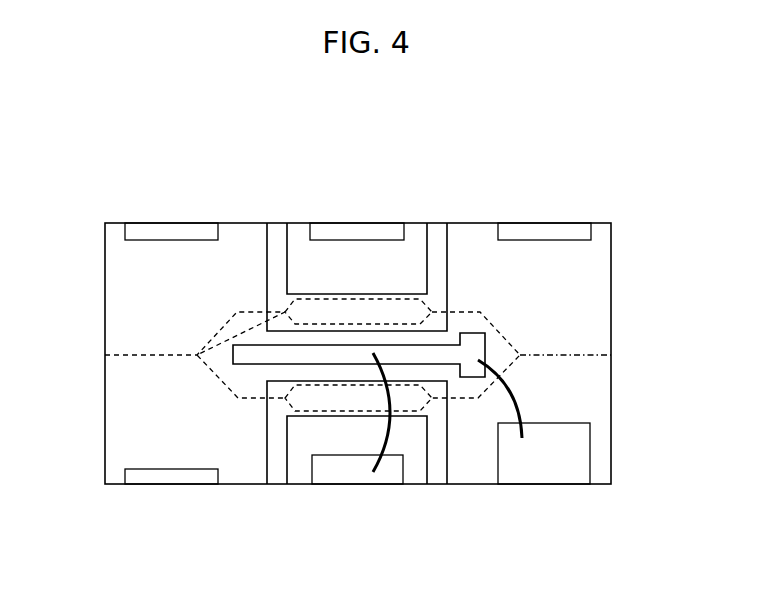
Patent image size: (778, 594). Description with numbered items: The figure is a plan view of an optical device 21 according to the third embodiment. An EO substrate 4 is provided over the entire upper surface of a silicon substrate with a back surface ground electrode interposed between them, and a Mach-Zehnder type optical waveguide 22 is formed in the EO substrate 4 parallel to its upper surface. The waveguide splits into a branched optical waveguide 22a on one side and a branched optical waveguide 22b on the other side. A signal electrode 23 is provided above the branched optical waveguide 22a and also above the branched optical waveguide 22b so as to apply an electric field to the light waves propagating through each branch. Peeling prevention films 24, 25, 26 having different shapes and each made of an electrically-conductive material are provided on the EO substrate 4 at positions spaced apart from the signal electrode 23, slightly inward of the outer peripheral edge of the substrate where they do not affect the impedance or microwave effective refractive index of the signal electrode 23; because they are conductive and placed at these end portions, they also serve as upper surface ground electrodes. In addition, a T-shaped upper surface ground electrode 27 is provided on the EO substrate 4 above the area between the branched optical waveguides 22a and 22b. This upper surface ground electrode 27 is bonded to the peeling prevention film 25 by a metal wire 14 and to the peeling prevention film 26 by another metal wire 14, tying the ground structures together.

The EO substrate 4 is at (603, 260).
The optical device 21 is at (621, 194).
The Mach-Zehnder type optical waveguide 22 is at (560, 354).
The branched optical waveguide 22a is at (428, 309).
The branched optical waveguide 22b is at (288, 409).
The signal electrode 23 is at (434, 231).
The peeling prevention film 24 is at (172, 232).
The peeling prevention film 25 is at (335, 478).
The peeling prevention film 26 is at (533, 478).
The T-shaped upper surface ground electrode 27 is at (480, 339).
The metal wire 14 is at (393, 432).